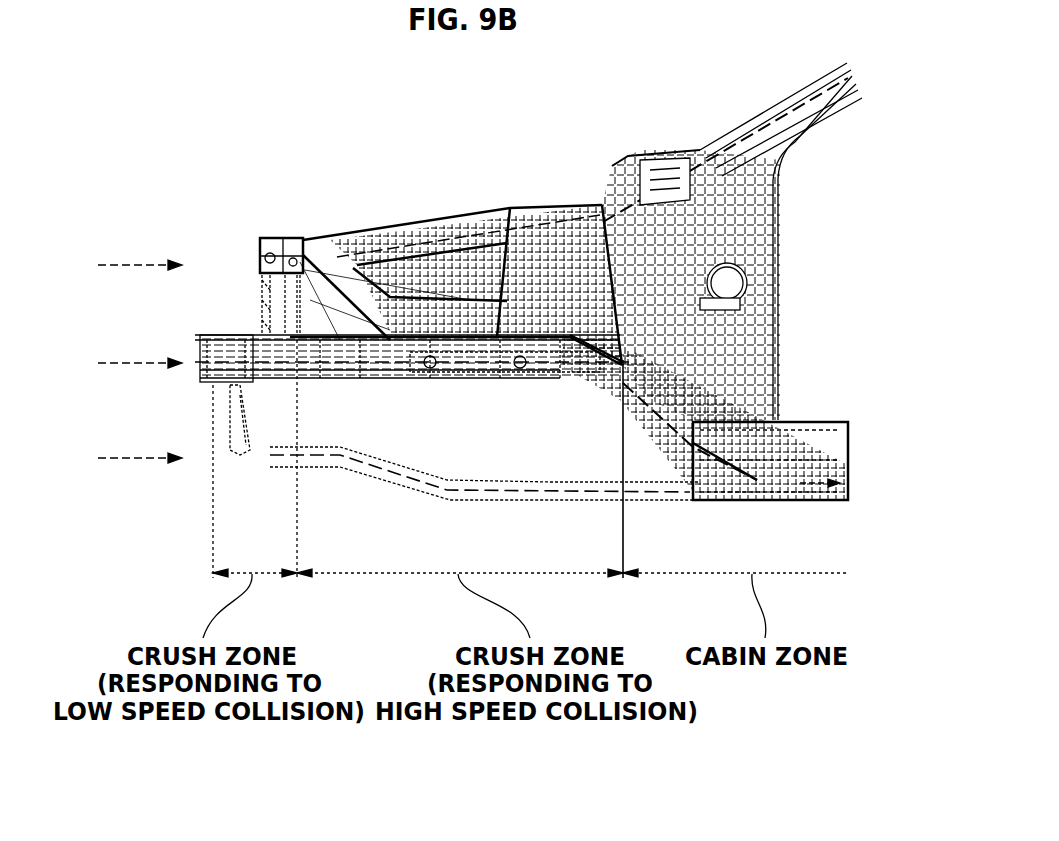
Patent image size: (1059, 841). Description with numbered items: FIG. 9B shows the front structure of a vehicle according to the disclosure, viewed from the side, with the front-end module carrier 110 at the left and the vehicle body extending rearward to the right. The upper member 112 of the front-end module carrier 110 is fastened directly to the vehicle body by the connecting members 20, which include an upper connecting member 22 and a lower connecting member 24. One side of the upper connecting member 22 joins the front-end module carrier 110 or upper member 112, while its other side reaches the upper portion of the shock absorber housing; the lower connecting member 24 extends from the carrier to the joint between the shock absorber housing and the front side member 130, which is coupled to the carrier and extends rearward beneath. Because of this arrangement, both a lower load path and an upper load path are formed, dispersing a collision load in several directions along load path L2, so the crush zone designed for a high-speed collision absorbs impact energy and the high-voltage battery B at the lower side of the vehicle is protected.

The front-end module carrier 110 is at (258, 254).
The upper member 112 is at (280, 242).
The connecting members 20 is at (412, 297).
The upper connecting member 22 is at (443, 212).
The lower connecting member 24 is at (394, 340).
The front side member 130 is at (438, 372).
The load path L2 is at (226, 358).
The high-voltage battery B is at (833, 423).